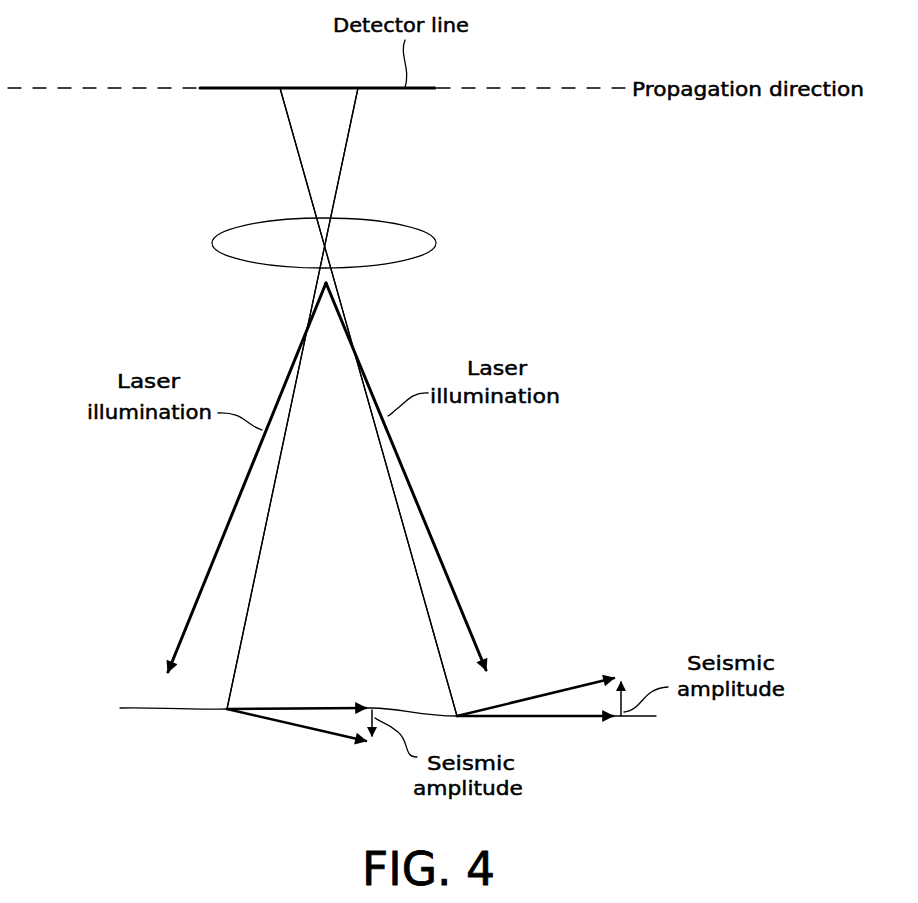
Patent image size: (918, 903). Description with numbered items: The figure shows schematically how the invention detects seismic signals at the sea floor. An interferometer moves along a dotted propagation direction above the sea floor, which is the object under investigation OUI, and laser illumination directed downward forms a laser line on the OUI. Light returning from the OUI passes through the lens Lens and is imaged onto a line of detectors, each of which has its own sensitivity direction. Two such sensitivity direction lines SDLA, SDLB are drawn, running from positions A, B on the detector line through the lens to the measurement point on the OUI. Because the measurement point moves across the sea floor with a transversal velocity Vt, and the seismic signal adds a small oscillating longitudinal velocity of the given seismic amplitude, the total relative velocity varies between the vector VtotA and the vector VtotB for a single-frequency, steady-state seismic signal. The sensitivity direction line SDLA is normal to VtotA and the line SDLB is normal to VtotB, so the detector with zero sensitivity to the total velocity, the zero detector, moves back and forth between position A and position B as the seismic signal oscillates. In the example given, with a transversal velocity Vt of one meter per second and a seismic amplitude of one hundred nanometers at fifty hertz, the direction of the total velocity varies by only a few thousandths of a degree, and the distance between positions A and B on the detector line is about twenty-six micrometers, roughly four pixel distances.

The position A on the line of detectors A is at (364, 388).
The position B on the line of detectors B is at (297, 385).
The lens Lens is at (293, 243).
The sensitivity direction line for position A SDLA is at (396, 506).
The sensitivity direction line for position B SDLB is at (260, 560).
The object under investigation OUI is at (361, 709).
The transversal velocity Vt is at (580, 757).
The total velocity vector A VtotA is at (563, 687).
The total velocity vector B VtotB is at (291, 733).